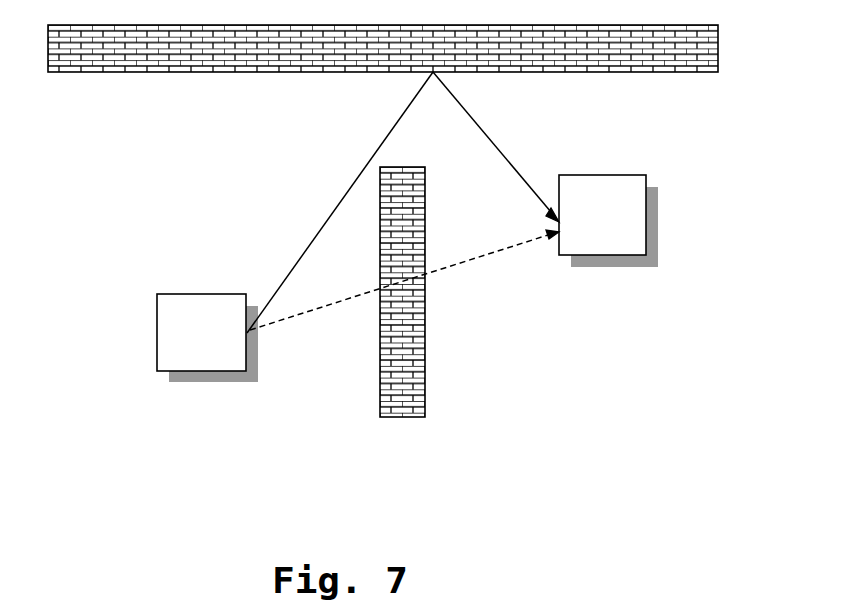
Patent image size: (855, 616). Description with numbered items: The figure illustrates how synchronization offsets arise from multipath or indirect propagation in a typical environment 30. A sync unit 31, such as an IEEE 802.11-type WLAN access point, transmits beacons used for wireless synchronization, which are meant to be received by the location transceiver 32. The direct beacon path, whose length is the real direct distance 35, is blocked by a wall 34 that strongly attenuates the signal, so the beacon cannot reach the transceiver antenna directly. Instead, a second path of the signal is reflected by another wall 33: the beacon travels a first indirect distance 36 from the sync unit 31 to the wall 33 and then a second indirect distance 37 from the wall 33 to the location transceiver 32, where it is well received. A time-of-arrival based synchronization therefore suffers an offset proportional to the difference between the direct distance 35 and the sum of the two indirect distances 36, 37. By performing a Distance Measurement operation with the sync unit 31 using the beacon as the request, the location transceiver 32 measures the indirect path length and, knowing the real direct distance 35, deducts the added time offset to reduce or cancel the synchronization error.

The typical environment 30 is at (80, 195).
The sync unit 31 is at (216, 367).
The location transceiver 32 is at (622, 247).
The wall 33 is at (713, 63).
The wall 34 is at (413, 417).
The R1 35 is at (488, 292).
The R2 36 is at (313, 158).
The R3 37 is at (528, 140).